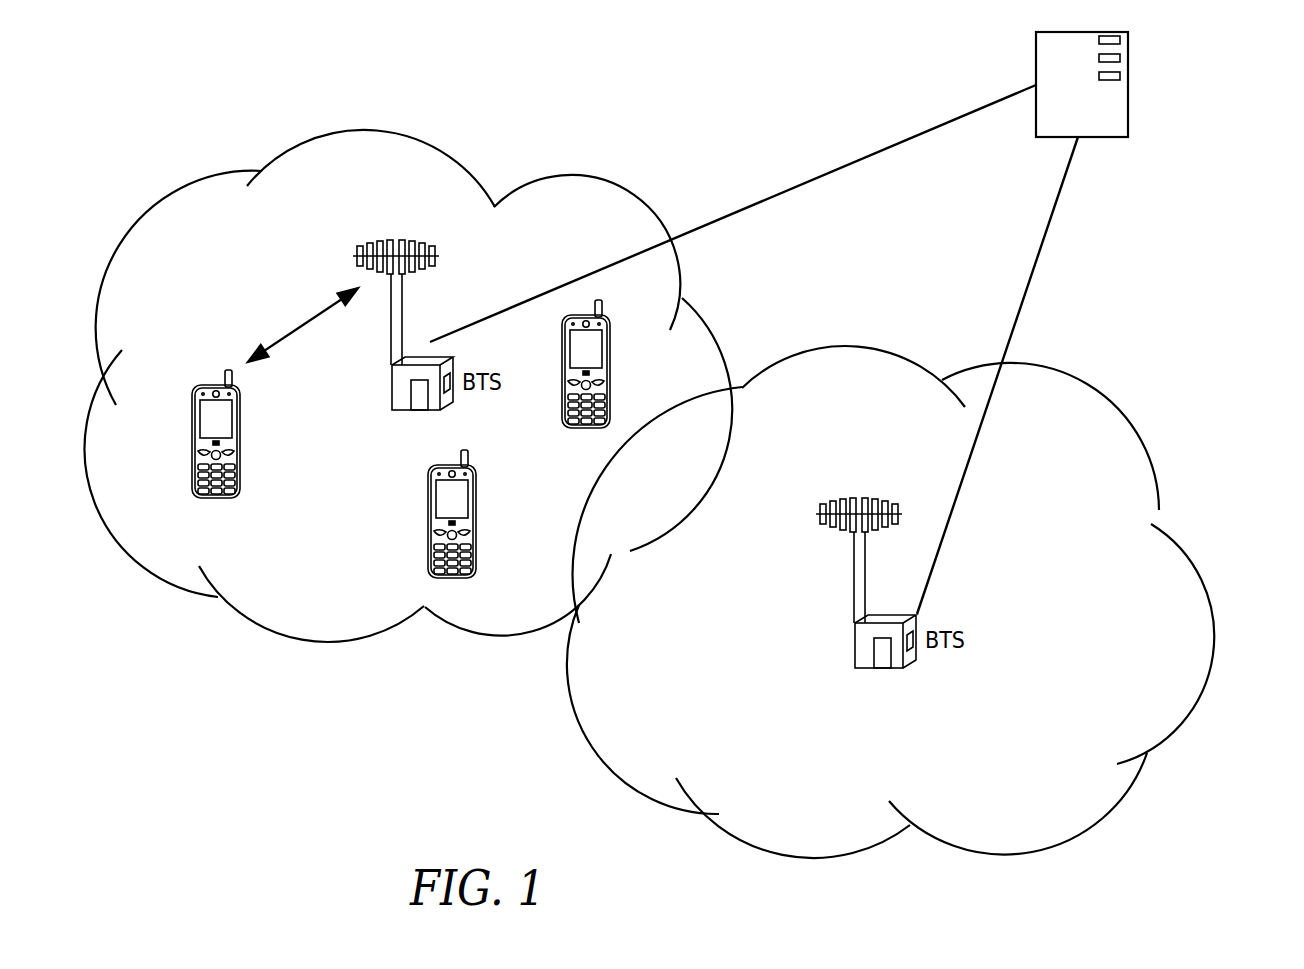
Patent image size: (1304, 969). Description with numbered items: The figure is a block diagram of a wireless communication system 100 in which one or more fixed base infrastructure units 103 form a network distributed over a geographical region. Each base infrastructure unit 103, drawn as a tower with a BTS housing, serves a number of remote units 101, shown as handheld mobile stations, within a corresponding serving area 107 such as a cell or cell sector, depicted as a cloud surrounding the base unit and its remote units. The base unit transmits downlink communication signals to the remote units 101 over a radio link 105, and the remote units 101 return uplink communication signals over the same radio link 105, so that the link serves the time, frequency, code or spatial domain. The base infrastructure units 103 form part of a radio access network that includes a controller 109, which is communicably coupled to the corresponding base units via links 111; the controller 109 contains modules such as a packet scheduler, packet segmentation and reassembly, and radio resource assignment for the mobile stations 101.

The wireless communication system 100 is at (1296, 57).
The remote unit 101 is at (240, 484).
The base infrastructure unit 103 is at (392, 400).
The radio link 105 is at (308, 325).
The serving area 107 is at (366, 128).
The controller 109 is at (1036, 53).
The link 111 is at (867, 155).